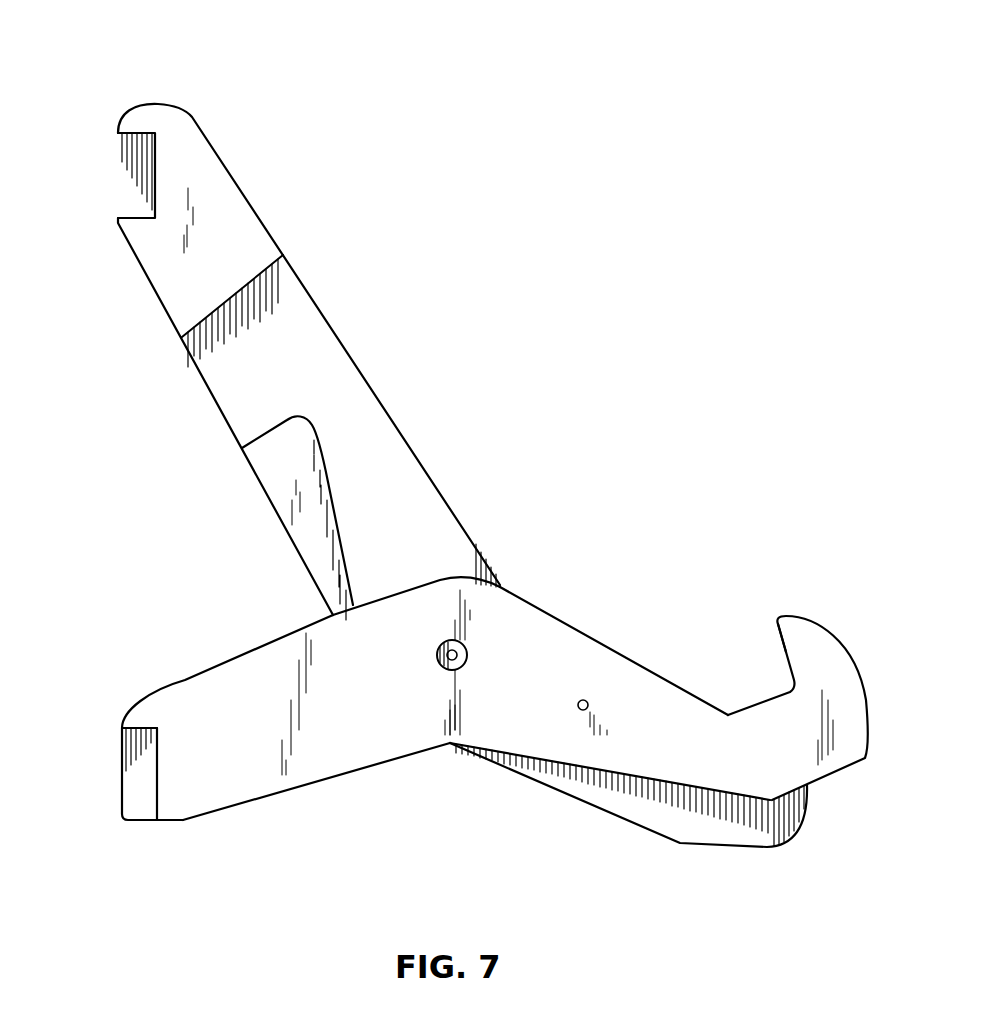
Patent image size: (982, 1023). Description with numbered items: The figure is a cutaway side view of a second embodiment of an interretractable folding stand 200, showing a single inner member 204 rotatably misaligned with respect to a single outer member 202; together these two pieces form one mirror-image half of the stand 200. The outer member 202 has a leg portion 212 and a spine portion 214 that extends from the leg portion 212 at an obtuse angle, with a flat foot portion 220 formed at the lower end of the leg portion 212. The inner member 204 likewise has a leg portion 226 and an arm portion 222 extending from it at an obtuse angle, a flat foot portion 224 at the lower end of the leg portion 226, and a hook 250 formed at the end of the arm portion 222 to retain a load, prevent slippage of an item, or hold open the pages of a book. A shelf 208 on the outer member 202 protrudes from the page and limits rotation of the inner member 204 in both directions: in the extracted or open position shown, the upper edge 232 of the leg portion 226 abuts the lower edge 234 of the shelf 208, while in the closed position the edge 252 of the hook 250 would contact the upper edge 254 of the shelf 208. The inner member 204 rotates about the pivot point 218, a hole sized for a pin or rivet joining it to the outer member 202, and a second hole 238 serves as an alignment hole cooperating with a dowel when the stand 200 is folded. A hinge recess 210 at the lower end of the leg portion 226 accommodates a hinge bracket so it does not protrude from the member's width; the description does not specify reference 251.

The interretractable folding stand 200 is at (523, 125).
The outer member 202 is at (336, 325).
The inner member 204 is at (205, 710).
The shelf 208 is at (297, 515).
The hinge recess 210 is at (135, 793).
The leg portion 212 is at (140, 186).
The spine portion 214 is at (180, 368).
The pivot point 218 is at (440, 663).
The flat foot portion 220 is at (735, 854).
The arm portion 222 is at (611, 620).
The flat foot portion 224 is at (148, 835).
The leg portion 226 is at (263, 809).
The upper edge 232 is at (255, 647).
The lower edge 234 is at (347, 620).
The second hole 238 is at (583, 700).
The hook 250 is at (825, 614).
The edge of end portion 251 is at (115, 756).
The edge 252 is at (114, 143).
The upper edge 254 is at (267, 430).